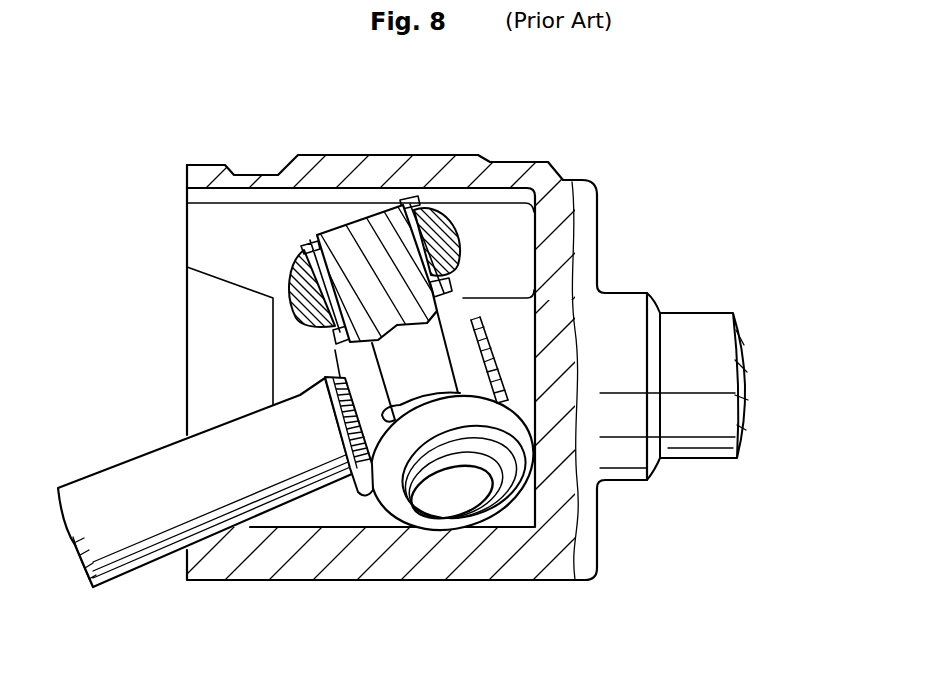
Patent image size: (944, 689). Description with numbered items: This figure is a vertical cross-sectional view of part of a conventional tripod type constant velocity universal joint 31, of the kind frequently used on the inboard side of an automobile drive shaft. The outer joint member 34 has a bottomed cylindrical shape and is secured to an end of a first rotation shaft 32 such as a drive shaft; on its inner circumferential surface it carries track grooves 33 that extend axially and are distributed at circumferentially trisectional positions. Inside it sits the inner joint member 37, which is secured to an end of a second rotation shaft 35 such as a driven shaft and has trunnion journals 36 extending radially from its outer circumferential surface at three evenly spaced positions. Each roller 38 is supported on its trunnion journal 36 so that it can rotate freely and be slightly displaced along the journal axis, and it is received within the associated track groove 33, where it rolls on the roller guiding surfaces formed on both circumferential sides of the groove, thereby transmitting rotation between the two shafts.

The tripod type constant velocity universal joint 31 is at (475, 328).
The first rotation shaft 32 is at (701, 445).
The track groove 33 is at (218, 220).
The outer joint member 34 is at (431, 163).
The second rotation shaft 35 is at (138, 473).
The trunnion journal 36 is at (352, 232).
The inner joint member 37 is at (490, 305).
The roller 38 is at (295, 262).